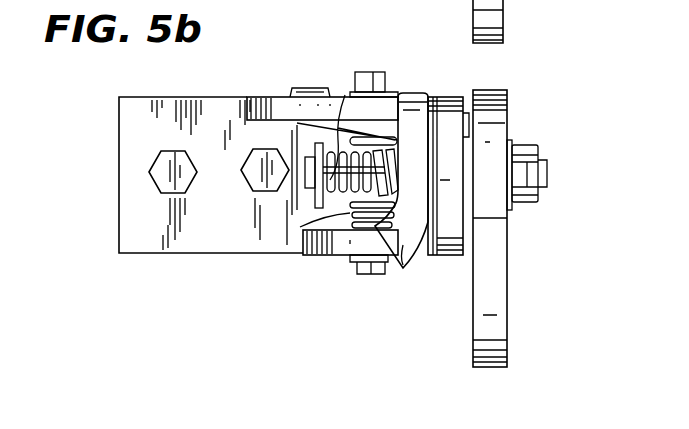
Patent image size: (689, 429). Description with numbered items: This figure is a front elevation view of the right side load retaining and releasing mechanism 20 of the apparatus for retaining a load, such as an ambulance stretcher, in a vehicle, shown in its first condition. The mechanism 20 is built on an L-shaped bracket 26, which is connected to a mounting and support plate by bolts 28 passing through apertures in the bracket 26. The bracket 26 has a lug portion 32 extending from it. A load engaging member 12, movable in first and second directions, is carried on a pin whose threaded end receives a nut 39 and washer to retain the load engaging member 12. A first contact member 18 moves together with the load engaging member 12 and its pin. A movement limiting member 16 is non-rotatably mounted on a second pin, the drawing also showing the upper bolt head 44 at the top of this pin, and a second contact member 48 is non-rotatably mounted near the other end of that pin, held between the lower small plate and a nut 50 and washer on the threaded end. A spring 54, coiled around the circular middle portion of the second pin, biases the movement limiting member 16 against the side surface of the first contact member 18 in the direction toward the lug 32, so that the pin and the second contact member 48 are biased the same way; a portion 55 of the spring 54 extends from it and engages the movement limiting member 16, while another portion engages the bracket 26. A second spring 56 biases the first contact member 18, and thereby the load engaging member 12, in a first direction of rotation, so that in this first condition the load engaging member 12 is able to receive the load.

The load engaging member 12 is at (508, 301).
The movement limiting member 16 is at (263, 96).
The first contact member 18 is at (405, 244).
The load retaining and releasing mechanism 20 is at (184, 198).
The bracket 26 is at (178, 255).
The bolts 28 is at (253, 168).
The lug portion 32 is at (448, 246).
The nut 39 is at (528, 157).
The bolt 44 is at (387, 75).
The second contact member 48 is at (303, 258).
The nut 50 is at (363, 271).
The spring 54 is at (303, 227).
The portion of the spring 55 is at (306, 87).
The second spring 56 is at (345, 95).